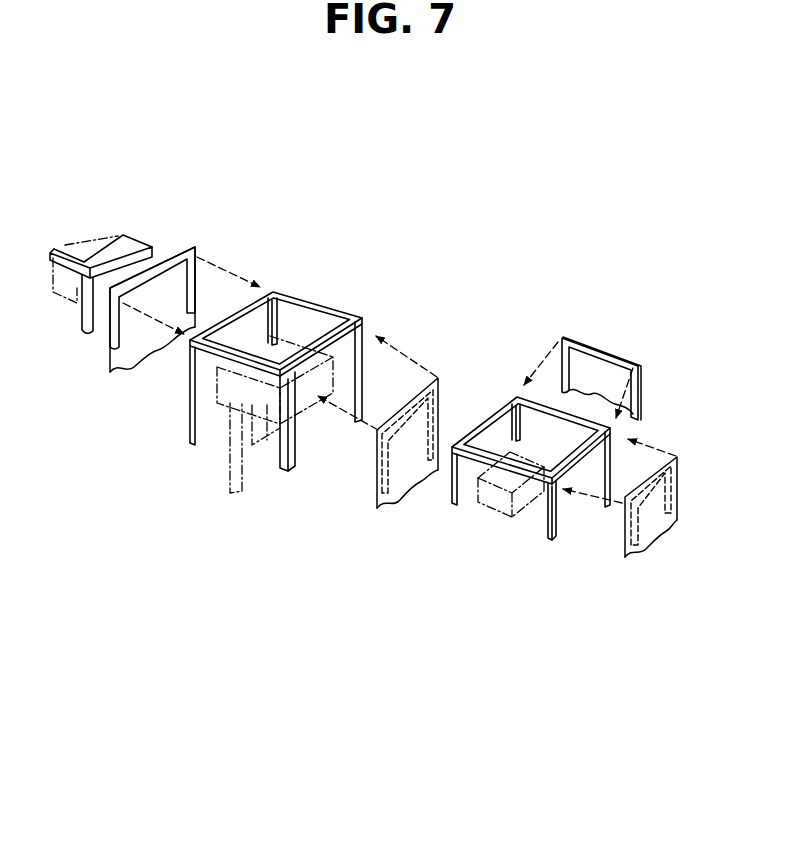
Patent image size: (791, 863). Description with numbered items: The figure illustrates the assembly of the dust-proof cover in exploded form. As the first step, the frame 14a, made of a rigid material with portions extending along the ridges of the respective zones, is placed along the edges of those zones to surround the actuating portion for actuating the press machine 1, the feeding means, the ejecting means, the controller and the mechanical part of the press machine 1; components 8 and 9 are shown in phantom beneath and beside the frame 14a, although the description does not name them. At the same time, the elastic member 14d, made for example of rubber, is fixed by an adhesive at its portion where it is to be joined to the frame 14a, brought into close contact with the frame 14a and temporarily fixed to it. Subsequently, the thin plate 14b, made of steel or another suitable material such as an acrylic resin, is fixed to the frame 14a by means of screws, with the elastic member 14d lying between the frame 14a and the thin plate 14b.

The press machine 1 is at (205, 388).
The corner bracket member 8 is at (64, 297).
The auxiliary component block 9 is at (499, 507).
The frame 14a is at (146, 243).
The thin plate 14b is at (113, 363).
The elastic member 14d is at (193, 284).